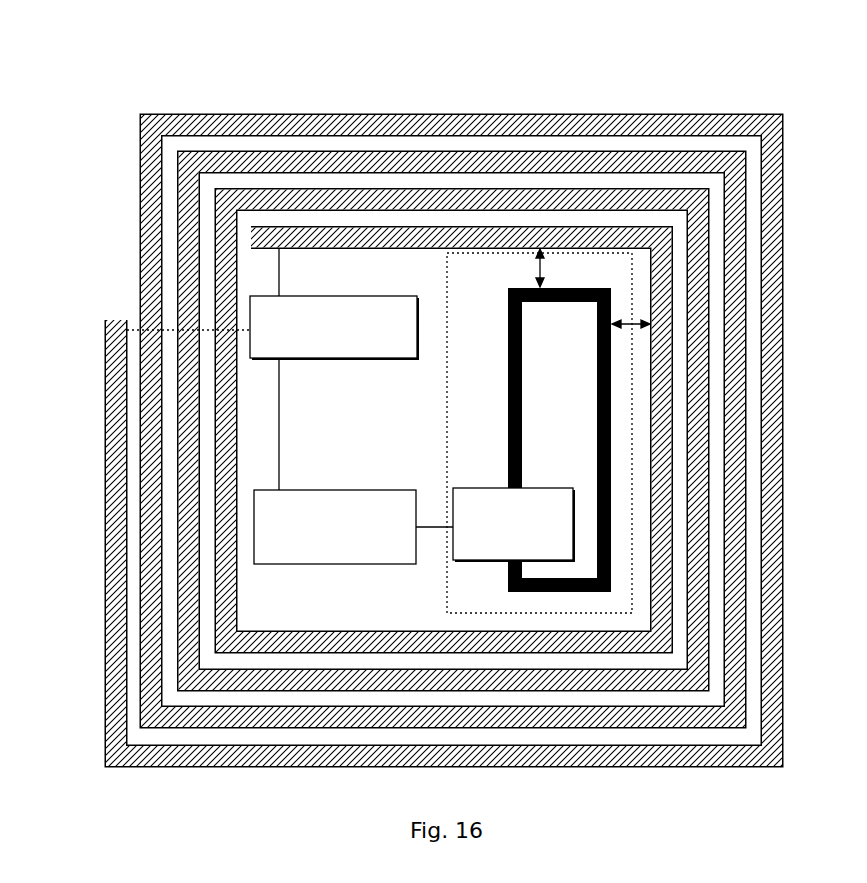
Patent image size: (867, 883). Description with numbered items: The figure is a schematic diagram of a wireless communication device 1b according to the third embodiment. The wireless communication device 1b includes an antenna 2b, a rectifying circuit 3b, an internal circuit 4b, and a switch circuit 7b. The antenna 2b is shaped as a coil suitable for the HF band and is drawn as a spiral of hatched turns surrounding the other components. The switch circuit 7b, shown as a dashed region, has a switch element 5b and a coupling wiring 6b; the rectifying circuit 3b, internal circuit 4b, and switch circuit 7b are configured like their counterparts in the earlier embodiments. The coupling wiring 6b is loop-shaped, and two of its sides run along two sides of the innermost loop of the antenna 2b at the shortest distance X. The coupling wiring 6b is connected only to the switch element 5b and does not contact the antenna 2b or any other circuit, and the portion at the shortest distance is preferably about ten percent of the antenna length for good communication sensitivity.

The wireless communication device 1b is at (422, 41).
The antenna 2b is at (105, 364).
The rectifying circuit 3b is at (352, 294).
The internal circuit 4b is at (357, 490).
The switch element 5b is at (486, 486).
The coupling wiring 6b is at (508, 356).
The switch circuit 7b is at (447, 405).